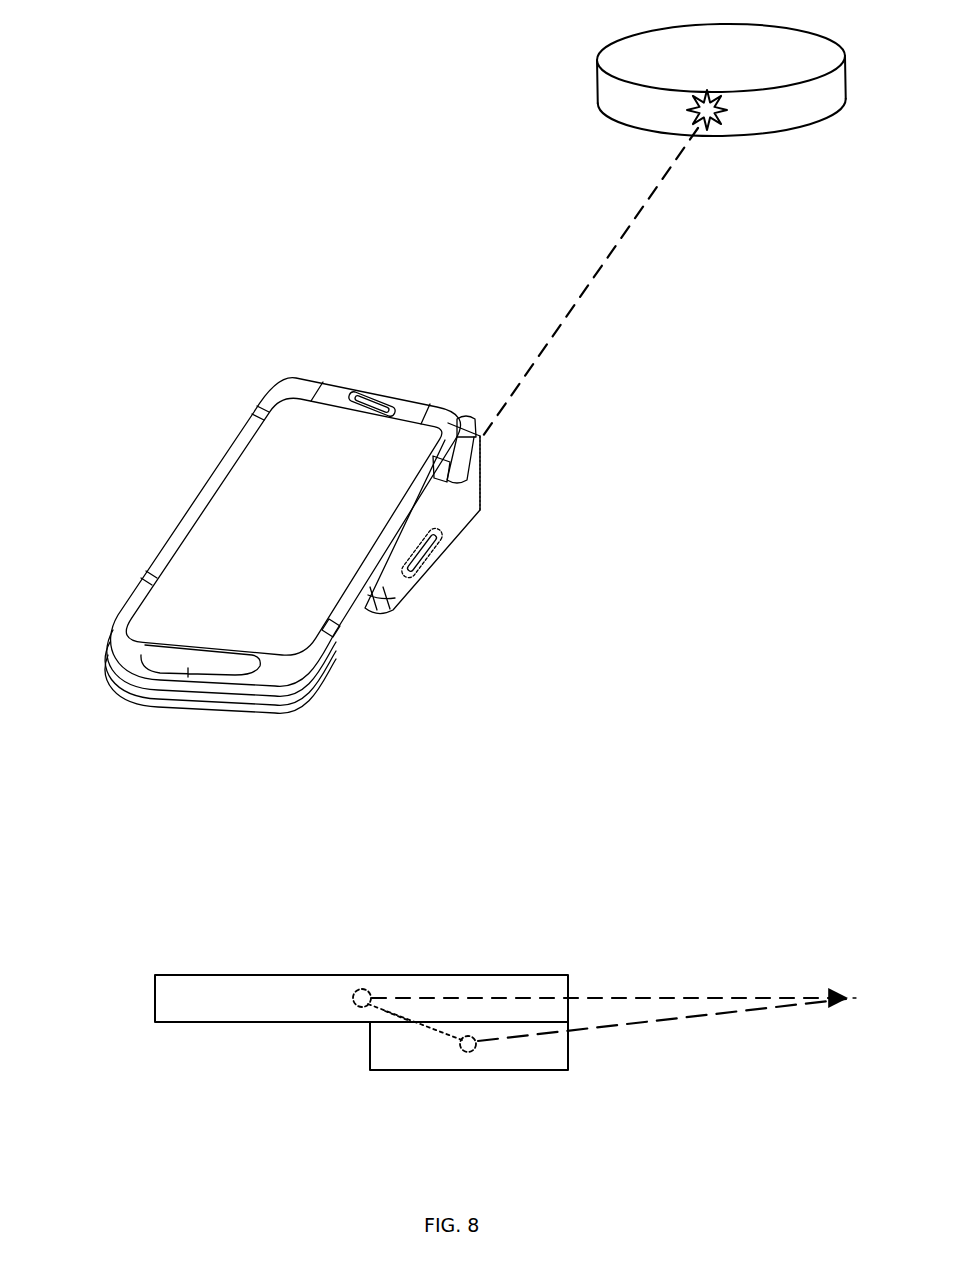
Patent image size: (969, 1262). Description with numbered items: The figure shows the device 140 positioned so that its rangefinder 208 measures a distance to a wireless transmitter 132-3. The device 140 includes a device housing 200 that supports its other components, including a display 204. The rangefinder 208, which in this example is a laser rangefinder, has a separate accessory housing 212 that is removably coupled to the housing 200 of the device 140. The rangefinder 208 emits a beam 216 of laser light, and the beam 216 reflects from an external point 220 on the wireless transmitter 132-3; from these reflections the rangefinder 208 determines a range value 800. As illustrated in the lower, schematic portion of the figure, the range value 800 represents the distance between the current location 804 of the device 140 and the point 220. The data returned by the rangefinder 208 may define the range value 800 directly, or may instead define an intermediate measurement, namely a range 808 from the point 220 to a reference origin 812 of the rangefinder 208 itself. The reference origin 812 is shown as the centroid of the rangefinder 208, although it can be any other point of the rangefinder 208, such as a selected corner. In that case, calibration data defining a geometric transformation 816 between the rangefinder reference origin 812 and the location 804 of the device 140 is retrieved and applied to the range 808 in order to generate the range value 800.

The wireless transmitter 132-3 is at (597, 61).
The external point 220 is at (727, 117).
The beam 216 is at (590, 282).
The device 140 is at (254, 408).
The display 204 is at (284, 526).
The rangefinder 208 is at (477, 515).
The accessory housing 212 is at (470, 483).
The device housing 200 is at (346, 629).
The current location 804 is at (358, 990).
The reference origin 812 is at (470, 1052).
The geometric transformation 816 is at (398, 1016).
The range value 800 is at (609, 985).
The range 808 is at (662, 1027).